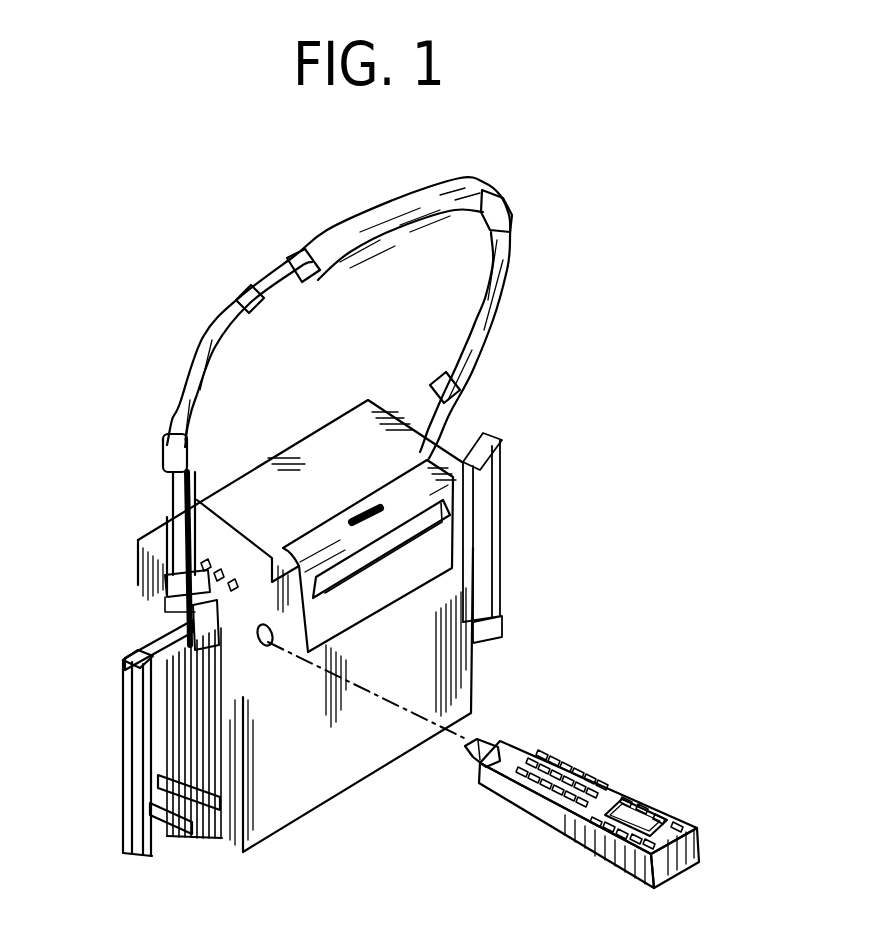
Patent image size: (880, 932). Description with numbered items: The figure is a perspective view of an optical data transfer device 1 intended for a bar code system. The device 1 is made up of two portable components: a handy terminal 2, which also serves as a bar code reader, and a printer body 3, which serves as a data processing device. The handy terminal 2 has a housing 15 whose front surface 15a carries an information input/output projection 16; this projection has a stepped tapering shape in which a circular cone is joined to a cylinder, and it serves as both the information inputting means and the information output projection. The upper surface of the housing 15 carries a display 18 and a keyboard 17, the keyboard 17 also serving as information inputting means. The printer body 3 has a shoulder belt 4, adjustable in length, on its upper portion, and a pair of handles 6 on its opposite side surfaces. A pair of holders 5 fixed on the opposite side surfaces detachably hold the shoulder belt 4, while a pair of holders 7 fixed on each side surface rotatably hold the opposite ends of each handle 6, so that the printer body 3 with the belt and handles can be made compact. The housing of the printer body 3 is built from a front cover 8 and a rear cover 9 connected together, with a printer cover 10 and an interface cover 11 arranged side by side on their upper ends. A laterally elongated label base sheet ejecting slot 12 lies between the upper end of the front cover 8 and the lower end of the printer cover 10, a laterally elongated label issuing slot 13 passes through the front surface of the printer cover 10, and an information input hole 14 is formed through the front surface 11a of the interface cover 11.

The optical data transfer device 1 is at (565, 416).
The handy terminal 2 is at (596, 802).
The printer body 3 is at (447, 607).
The shoulder belt 4 is at (207, 338).
The holders 5 is at (160, 603).
The handles 6 is at (135, 740).
The holders 7 is at (127, 684).
The front cover 8 is at (347, 715).
The rear cover 9 is at (157, 757).
The printer cover 10 is at (353, 400).
The interface cover 11 is at (228, 567).
The front surface 11a is at (267, 597).
The label base sheet ejecting slot 12 is at (373, 603).
The label issuing slot 13 is at (440, 528).
The information input hole 14 is at (265, 640).
The housing 15 is at (600, 843).
The front surface 15a is at (480, 777).
The information input/output projection 16 is at (470, 742).
The keyboard 17 is at (597, 778).
The display 18 is at (650, 828).